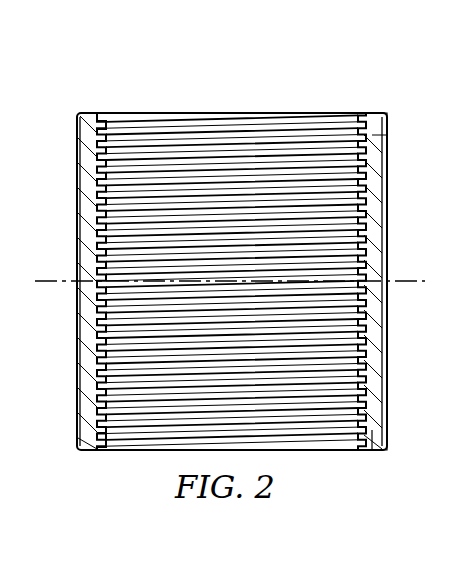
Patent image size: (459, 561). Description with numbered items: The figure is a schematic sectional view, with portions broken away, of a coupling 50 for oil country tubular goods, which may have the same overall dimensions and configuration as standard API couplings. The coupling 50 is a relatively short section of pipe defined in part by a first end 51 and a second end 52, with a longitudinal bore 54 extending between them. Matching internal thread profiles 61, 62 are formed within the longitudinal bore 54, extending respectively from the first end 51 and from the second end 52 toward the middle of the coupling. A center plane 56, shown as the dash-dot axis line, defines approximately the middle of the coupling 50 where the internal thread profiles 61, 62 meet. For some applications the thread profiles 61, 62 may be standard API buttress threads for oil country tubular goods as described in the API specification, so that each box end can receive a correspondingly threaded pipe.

The coupling 50 is at (289, 79).
The first end 51 is at (376, 113).
The second end 52 is at (378, 451).
The longitudinal bore 54 is at (251, 386).
The center plane 56 is at (50, 278).
The internal thread profile 61 is at (108, 127).
The internal thread profile 62 is at (111, 440).